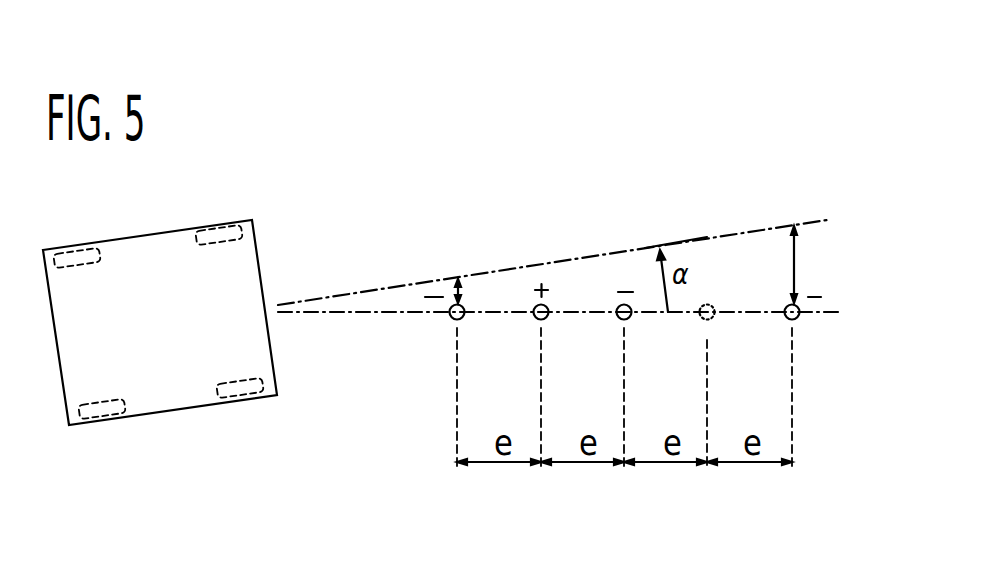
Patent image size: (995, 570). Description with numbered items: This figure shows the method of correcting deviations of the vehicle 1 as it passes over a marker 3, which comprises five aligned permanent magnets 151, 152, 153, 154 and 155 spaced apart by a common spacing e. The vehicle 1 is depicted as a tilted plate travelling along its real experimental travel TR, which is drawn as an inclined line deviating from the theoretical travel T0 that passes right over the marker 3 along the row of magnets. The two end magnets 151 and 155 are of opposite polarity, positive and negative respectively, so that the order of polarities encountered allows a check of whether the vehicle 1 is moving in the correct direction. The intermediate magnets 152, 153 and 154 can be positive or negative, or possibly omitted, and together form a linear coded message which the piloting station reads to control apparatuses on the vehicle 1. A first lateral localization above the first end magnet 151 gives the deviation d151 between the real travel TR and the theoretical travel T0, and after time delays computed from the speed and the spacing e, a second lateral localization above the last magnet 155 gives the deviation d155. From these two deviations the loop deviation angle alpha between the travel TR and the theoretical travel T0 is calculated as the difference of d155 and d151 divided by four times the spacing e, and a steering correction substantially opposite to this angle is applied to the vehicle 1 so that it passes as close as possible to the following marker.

The vehicle 1 is at (263, 256).
The marker 3 is at (591, 215).
The first end magnet 151 is at (450, 320).
The intermediate magnet 152 is at (535, 320).
The intermediate magnet 153 is at (618, 320).
The intermediate magnet 154 is at (699, 321).
The last end magnet 155 is at (786, 307).
The real experimental travel TR is at (697, 238).
The theoretical travel T0 is at (762, 317).
The deviation at first magnet d151 is at (466, 291).
The deviation at last magnet d155 is at (796, 253).